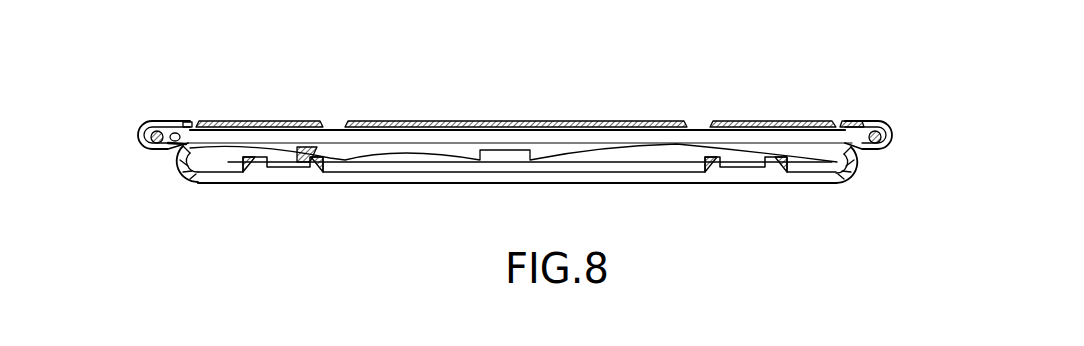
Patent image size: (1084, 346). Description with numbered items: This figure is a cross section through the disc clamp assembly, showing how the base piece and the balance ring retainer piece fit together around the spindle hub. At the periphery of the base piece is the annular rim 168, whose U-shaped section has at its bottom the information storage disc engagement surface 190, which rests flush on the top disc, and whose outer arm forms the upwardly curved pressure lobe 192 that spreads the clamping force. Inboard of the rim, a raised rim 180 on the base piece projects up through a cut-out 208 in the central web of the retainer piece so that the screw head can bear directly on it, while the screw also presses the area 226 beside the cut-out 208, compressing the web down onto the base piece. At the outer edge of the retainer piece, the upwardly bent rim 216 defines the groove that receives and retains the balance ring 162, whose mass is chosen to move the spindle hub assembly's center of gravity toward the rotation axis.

The balance ring 162 is at (834, 128).
The peripheral rim 168 is at (181, 168).
The raised rim 180 is at (318, 130).
The information storage disc engagement surface 190 is at (832, 182).
The pressure lobe 192 is at (372, 153).
The cut-out 208 is at (253, 130).
The upwardly bent rim 216 is at (146, 156).
The area adjacent the cut-out 226 is at (697, 153).